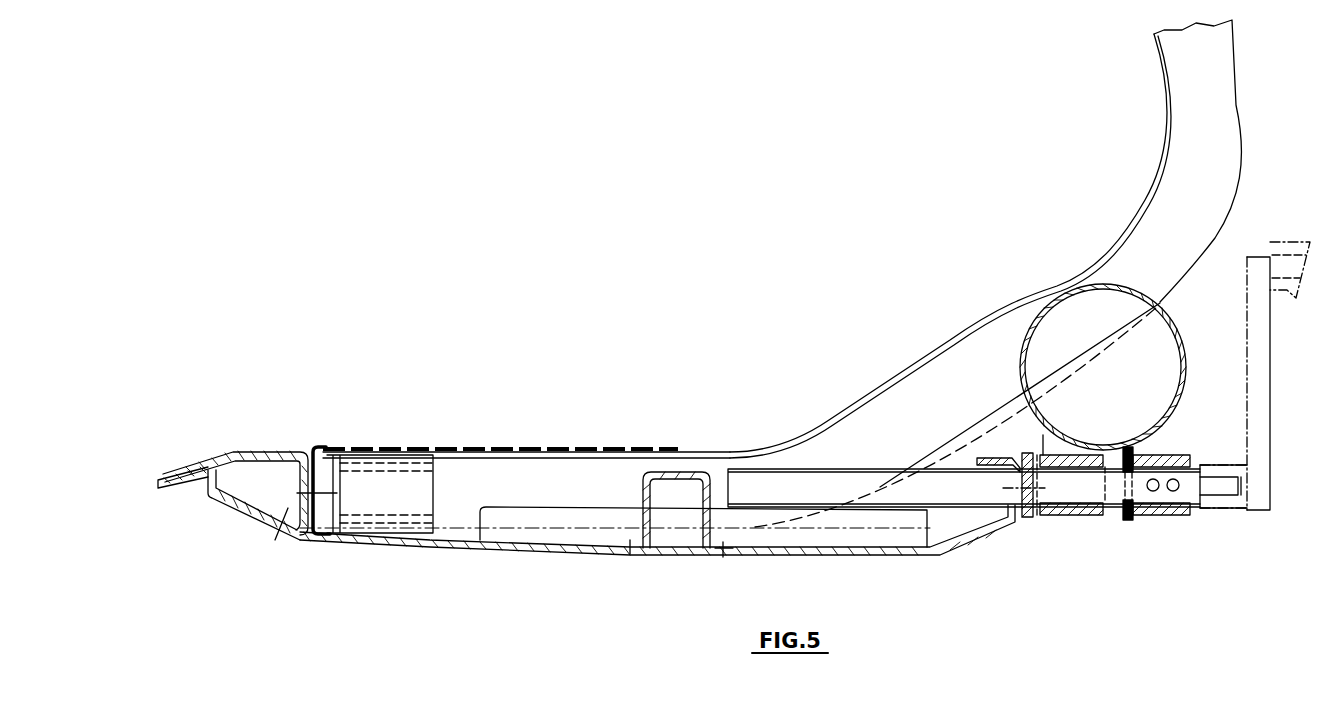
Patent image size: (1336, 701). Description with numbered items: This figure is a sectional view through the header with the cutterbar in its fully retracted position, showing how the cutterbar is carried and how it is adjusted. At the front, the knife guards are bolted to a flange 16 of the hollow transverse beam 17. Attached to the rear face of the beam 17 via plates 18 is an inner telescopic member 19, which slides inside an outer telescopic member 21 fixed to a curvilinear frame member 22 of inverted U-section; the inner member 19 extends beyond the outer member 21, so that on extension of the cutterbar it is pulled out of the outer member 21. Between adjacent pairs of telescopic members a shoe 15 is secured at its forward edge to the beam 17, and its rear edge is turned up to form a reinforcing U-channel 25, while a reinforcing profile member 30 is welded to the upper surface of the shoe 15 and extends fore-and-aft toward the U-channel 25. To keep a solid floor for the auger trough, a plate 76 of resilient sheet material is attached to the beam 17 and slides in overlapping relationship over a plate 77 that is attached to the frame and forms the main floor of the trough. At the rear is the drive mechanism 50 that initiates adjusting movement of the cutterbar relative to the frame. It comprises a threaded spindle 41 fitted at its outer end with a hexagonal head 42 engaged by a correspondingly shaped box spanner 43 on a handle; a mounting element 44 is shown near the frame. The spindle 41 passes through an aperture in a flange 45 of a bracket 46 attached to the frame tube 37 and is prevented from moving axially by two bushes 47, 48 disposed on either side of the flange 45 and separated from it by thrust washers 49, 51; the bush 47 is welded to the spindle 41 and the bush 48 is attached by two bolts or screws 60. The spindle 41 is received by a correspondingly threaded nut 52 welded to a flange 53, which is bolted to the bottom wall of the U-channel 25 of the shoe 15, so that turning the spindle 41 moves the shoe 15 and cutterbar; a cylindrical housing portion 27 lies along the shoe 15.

The shoe 15 is at (563, 552).
The flange 16 is at (198, 466).
The hollow transverse beam 17 is at (250, 454).
The plate 18 is at (314, 448).
The inner telescopic member 19 is at (389, 471).
The outer telescopic member 21 is at (455, 455).
The curvilinear frame member 22 is at (825, 422).
The U-channel 25 is at (1005, 458).
The cylindrical housing 27 is at (480, 513).
The reinforcing profile member 30 is at (722, 525).
The frame tube 37 is at (1182, 333).
The threaded spindle 41 is at (1203, 464).
The hexagonal head 42 is at (1223, 485).
The box spanner 43 is at (1243, 512).
The mounting bracket 44 is at (1288, 292).
The flange 45 is at (1128, 520).
The bracket 46 is at (1052, 446).
The bush 47 is at (1105, 513).
The bush 48 is at (1157, 517).
The thrust washer 49 is at (1127, 452).
The drive mechanism 50 is at (1236, 541).
The thrust washer 51 is at (1142, 456).
The threaded nut 52 is at (1065, 513).
The flange 53 is at (1025, 518).
The bolts or screws 60 is at (1173, 491).
The plate 76 is at (574, 449).
The plate 77 is at (937, 357).